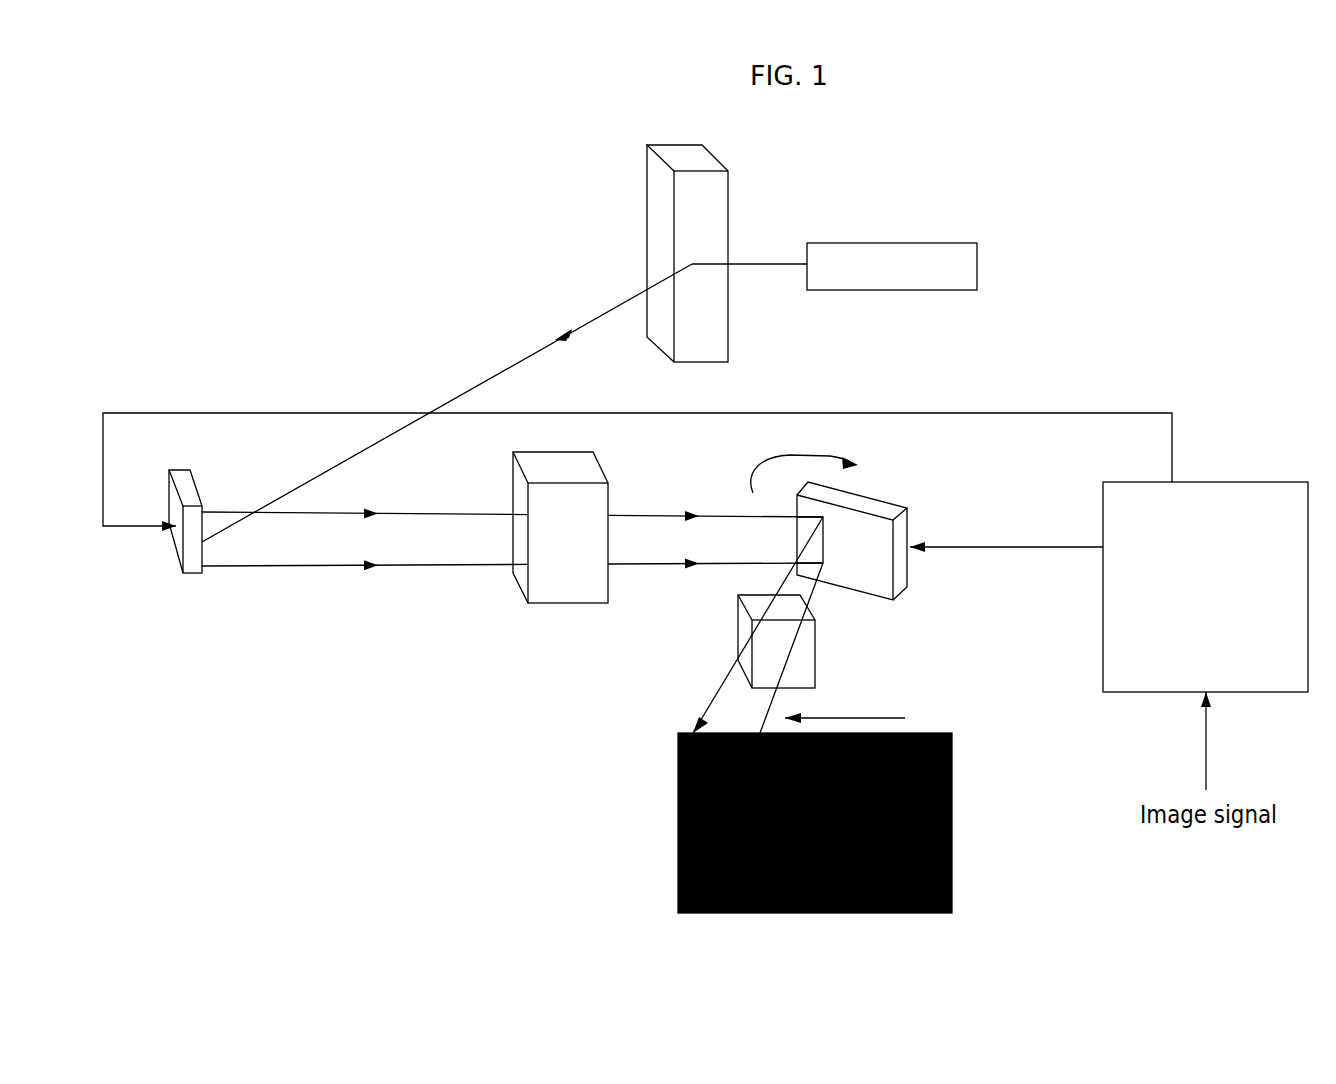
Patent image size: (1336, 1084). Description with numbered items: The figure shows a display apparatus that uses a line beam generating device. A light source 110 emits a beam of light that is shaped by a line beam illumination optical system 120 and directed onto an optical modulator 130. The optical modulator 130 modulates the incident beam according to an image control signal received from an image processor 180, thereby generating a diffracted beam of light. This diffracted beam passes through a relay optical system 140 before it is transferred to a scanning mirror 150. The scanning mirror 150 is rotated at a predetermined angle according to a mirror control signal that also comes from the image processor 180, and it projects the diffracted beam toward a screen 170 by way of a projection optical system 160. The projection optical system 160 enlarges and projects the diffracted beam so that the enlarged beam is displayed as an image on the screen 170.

The light source 110 is at (977, 252).
The line beam illumination optical system 120 is at (693, 160).
The optical modulator 130 is at (192, 563).
The relay optical system 140 is at (568, 603).
The scanning mirror 150 is at (890, 502).
The projection optical system 160 is at (815, 653).
The screen 170 is at (950, 783).
The image processor 180 is at (1243, 482).